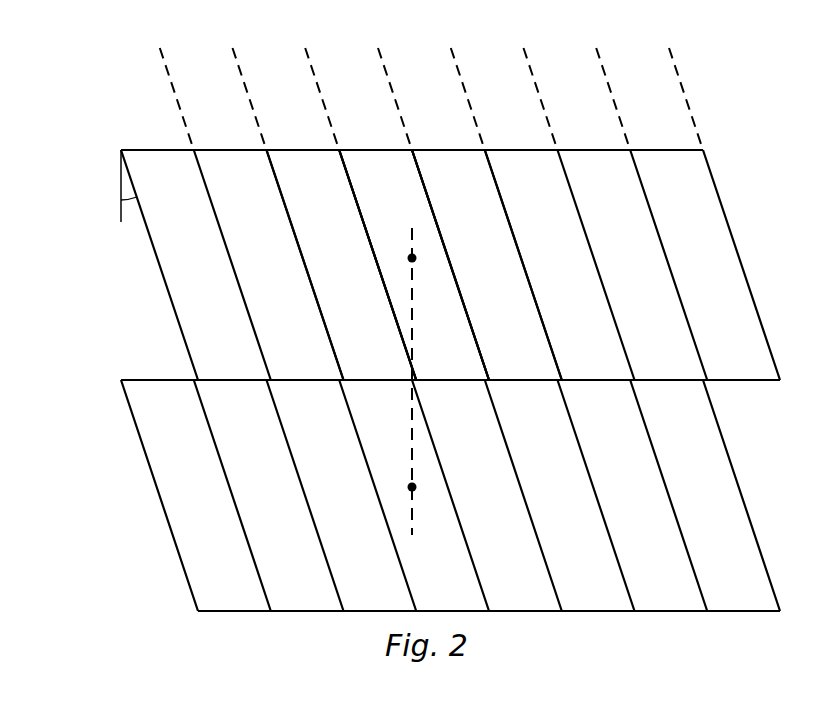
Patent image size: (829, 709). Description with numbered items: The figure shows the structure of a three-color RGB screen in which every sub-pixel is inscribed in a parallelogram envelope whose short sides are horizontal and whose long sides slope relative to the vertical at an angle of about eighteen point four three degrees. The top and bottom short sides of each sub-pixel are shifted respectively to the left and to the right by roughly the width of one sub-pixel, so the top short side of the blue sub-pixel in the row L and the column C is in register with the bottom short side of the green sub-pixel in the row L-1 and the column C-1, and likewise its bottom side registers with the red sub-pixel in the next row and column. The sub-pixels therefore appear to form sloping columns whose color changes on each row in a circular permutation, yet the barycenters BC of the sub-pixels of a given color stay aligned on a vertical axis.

The row L−1 L-1 is at (118, 84).
The row L is at (95, 256).
The column C−1 C-1 is at (273, 72).
The column C is at (347, 72).
The barycenter BC is at (415, 261).